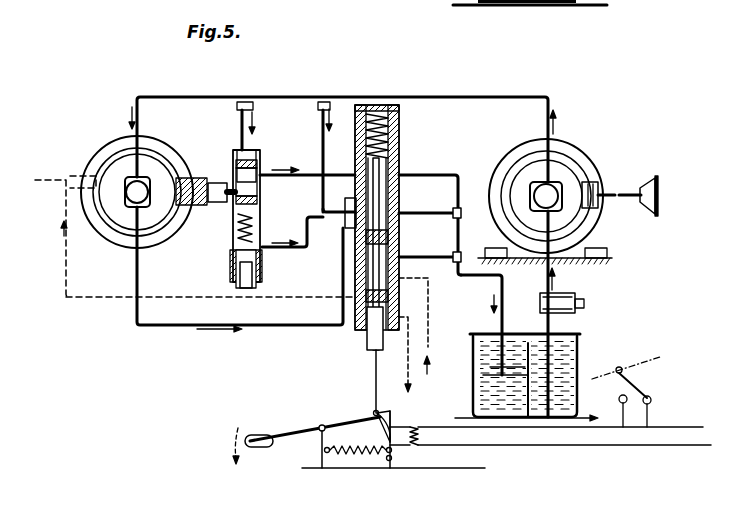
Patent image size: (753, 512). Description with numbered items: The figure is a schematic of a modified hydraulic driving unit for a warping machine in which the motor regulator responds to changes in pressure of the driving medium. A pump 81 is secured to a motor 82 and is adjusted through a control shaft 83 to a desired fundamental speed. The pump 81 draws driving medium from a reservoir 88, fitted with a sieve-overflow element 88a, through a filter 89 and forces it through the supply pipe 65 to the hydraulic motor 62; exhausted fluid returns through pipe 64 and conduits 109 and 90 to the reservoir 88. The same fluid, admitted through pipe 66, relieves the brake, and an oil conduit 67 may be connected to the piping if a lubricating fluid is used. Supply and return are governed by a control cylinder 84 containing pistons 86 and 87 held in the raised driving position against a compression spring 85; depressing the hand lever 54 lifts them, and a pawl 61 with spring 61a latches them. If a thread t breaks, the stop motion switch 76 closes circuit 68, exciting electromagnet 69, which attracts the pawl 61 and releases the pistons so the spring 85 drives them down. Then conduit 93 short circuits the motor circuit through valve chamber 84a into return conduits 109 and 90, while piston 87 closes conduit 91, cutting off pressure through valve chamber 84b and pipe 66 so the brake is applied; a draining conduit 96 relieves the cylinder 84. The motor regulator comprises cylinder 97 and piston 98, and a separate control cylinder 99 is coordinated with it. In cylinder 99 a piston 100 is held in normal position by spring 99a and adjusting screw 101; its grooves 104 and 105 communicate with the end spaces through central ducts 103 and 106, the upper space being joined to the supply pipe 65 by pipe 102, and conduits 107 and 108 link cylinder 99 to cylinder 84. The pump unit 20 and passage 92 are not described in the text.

The pump 20 is at (118, 146).
The motor 62 is at (112, 172).
The oil conduit 67 is at (51, 235).
The piston 98 is at (198, 206).
The groove 104 is at (218, 182).
The cylinder 97 is at (230, 178).
The central duct 103 is at (240, 162).
The pipe 102 is at (246, 108).
The control cylinder 99 is at (258, 164).
The groove 105 is at (238, 230).
The spring 99a is at (228, 262).
The adjusting screw 101 is at (252, 286).
The conduit 93 is at (315, 157).
The conduit 107 is at (318, 174).
The piston 100 is at (261, 190).
The central duct 106 is at (262, 222).
The conduit 108 is at (321, 212).
The pipe 66 is at (210, 282).
The pipe 64 is at (162, 330).
The pipe 65 is at (368, 97).
The control cylinder 84 is at (399, 112).
The compression spring 85 is at (389, 134).
The piston 86 is at (386, 170).
The valve chamber 84a is at (399, 226).
The valve chamber 84b is at (400, 292).
The draining conduit 96 is at (452, 172).
The conduit 109 is at (422, 211).
The conduit 90 is at (481, 325).
The conduit 91 is at (425, 326).
The drain passage (dashed) 92 is at (394, 354).
The piston 87 is at (370, 332).
The pump 81 is at (552, 165).
The motor 82 is at (580, 160).
The control shaft 83 is at (643, 198).
The filter 89 is at (562, 296).
The reservoir 88 is at (576, 340).
The sieve-overflow element 88a is at (483, 380).
The thread t is at (641, 367).
The stop motion switch 76 is at (640, 387).
The hand lever 54 is at (292, 424).
The pawl 61 is at (378, 428).
The spring 61a is at (352, 453).
The electromagnet 69 is at (420, 436).
The circuit 68 is at (482, 446).